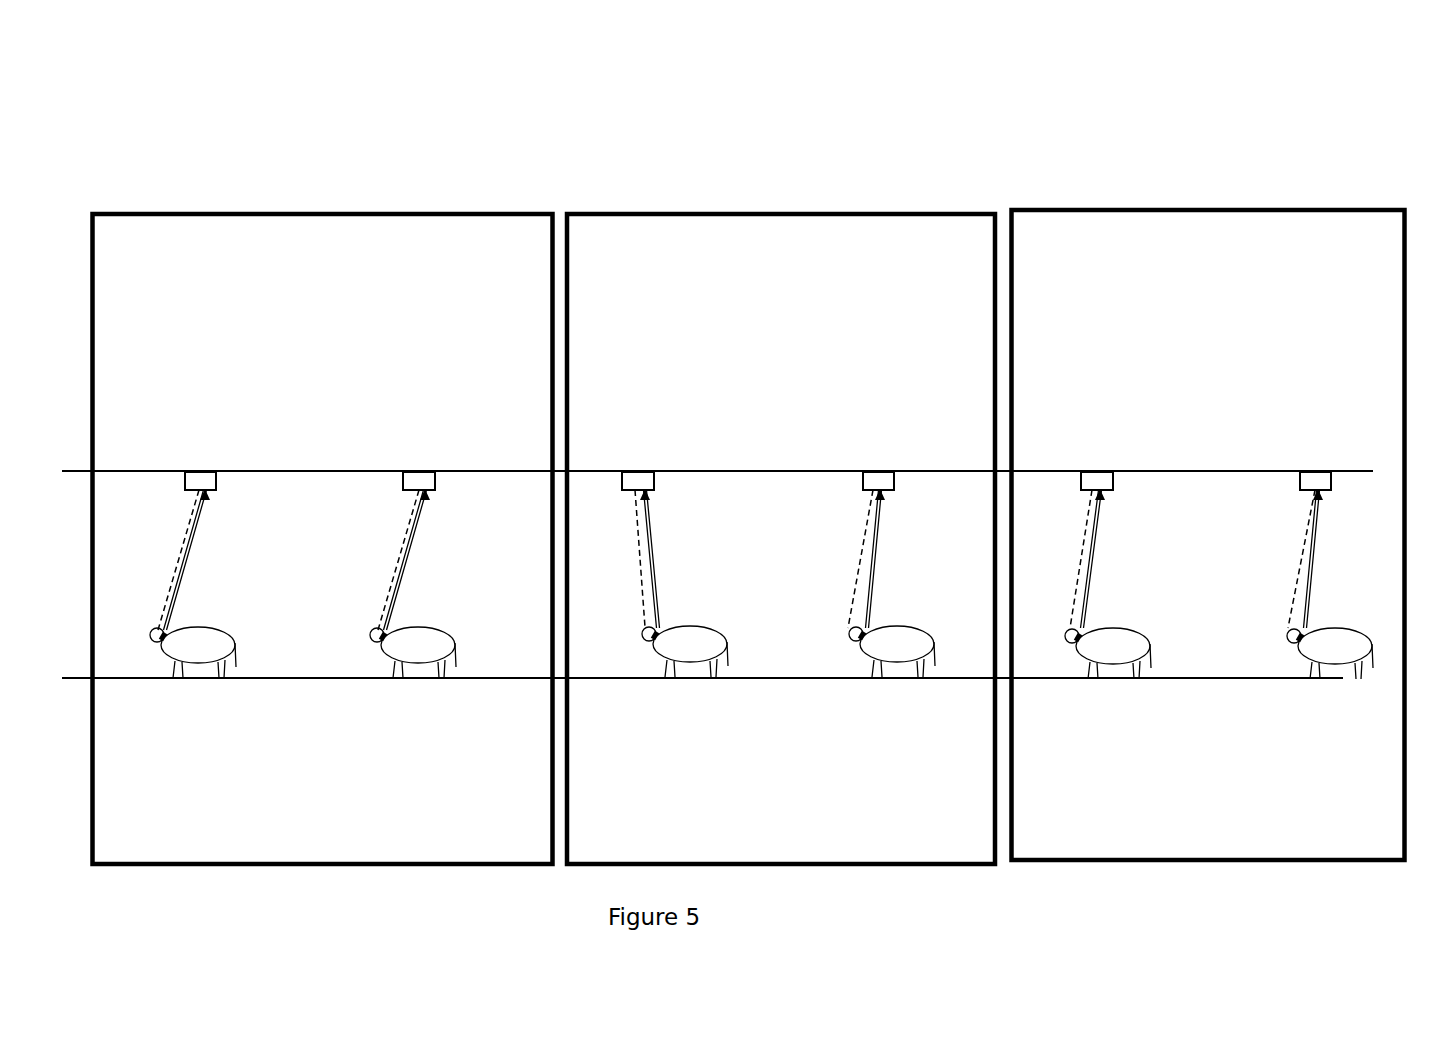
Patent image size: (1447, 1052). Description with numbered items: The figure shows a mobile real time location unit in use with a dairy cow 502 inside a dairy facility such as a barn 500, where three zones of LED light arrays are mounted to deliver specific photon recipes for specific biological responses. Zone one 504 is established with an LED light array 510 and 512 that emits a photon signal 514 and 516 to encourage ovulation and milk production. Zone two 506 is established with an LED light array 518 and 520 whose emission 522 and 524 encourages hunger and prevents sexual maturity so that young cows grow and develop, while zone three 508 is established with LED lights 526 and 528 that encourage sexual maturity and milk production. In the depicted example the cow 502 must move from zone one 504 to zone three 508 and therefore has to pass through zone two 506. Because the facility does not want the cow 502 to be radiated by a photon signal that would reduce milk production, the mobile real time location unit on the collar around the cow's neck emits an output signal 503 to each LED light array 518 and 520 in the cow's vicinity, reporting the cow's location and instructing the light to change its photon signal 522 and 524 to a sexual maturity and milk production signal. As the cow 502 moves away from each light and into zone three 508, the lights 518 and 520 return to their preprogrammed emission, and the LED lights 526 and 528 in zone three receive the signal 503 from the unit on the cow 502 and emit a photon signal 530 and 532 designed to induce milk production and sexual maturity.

The barn 500 is at (1176, 140).
The cow 502 is at (205, 678).
The output signal 503 is at (203, 551).
The zone one 504 is at (1208, 535).
The zone two 506 is at (781, 539).
The zone three 508 is at (323, 539).
The LED light array 510 is at (1313, 472).
The LED light array 512 is at (1097, 472).
The photon signal 514 is at (1294, 552).
The photon signal 516 is at (1081, 550).
The LED light array 518 is at (880, 472).
The LED light array 520 is at (638, 472).
The photon signal 522 is at (857, 550).
The photon signal 524 is at (627, 542).
The LED light 526 is at (425, 472).
The LED light 528 is at (200, 472).
The photon signal 530 is at (392, 543).
The photon signal 532 is at (162, 562).